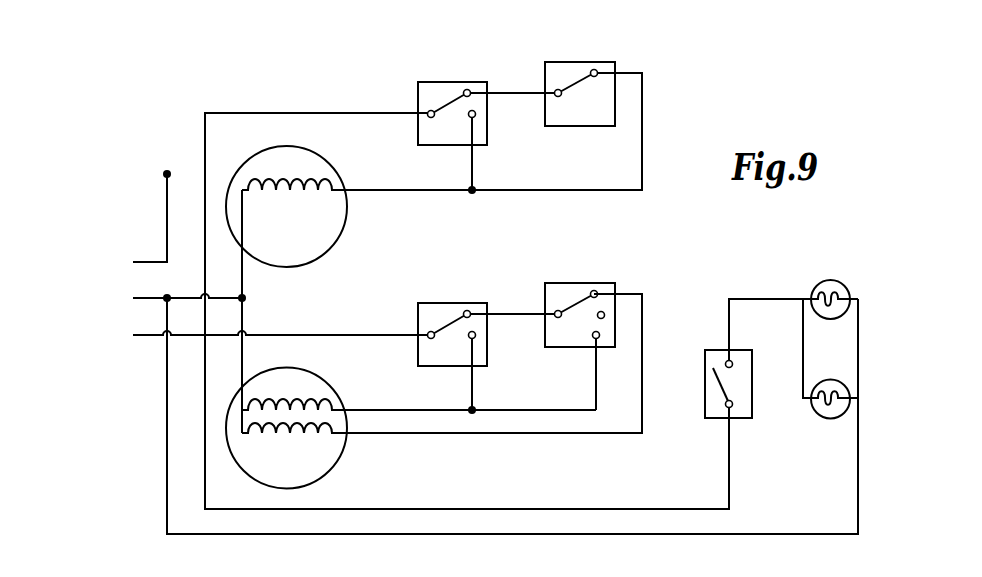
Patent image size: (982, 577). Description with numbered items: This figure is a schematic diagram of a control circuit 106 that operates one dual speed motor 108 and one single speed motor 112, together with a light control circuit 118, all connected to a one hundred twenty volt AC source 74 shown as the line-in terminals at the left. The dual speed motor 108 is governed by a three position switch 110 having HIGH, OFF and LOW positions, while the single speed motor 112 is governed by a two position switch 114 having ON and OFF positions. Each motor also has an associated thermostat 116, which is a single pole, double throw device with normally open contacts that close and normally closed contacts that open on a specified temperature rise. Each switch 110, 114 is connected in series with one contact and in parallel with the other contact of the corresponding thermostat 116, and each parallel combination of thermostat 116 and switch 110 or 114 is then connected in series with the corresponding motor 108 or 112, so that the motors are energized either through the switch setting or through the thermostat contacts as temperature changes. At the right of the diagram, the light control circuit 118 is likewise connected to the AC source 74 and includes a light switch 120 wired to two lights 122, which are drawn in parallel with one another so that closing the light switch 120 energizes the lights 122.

The 120 volt AC source 74 is at (130, 335).
The control circuit 106 is at (167, 135).
The dual speed motor 108 is at (324, 380).
The three position switch 110 is at (565, 283).
The single speed motor 112 is at (322, 158).
The two position switch 114 is at (565, 62).
The thermostat 116 is at (437, 82).
The light control circuit 118 is at (698, 312).
The light switch 120 is at (704, 387).
The lights 122 is at (833, 281).